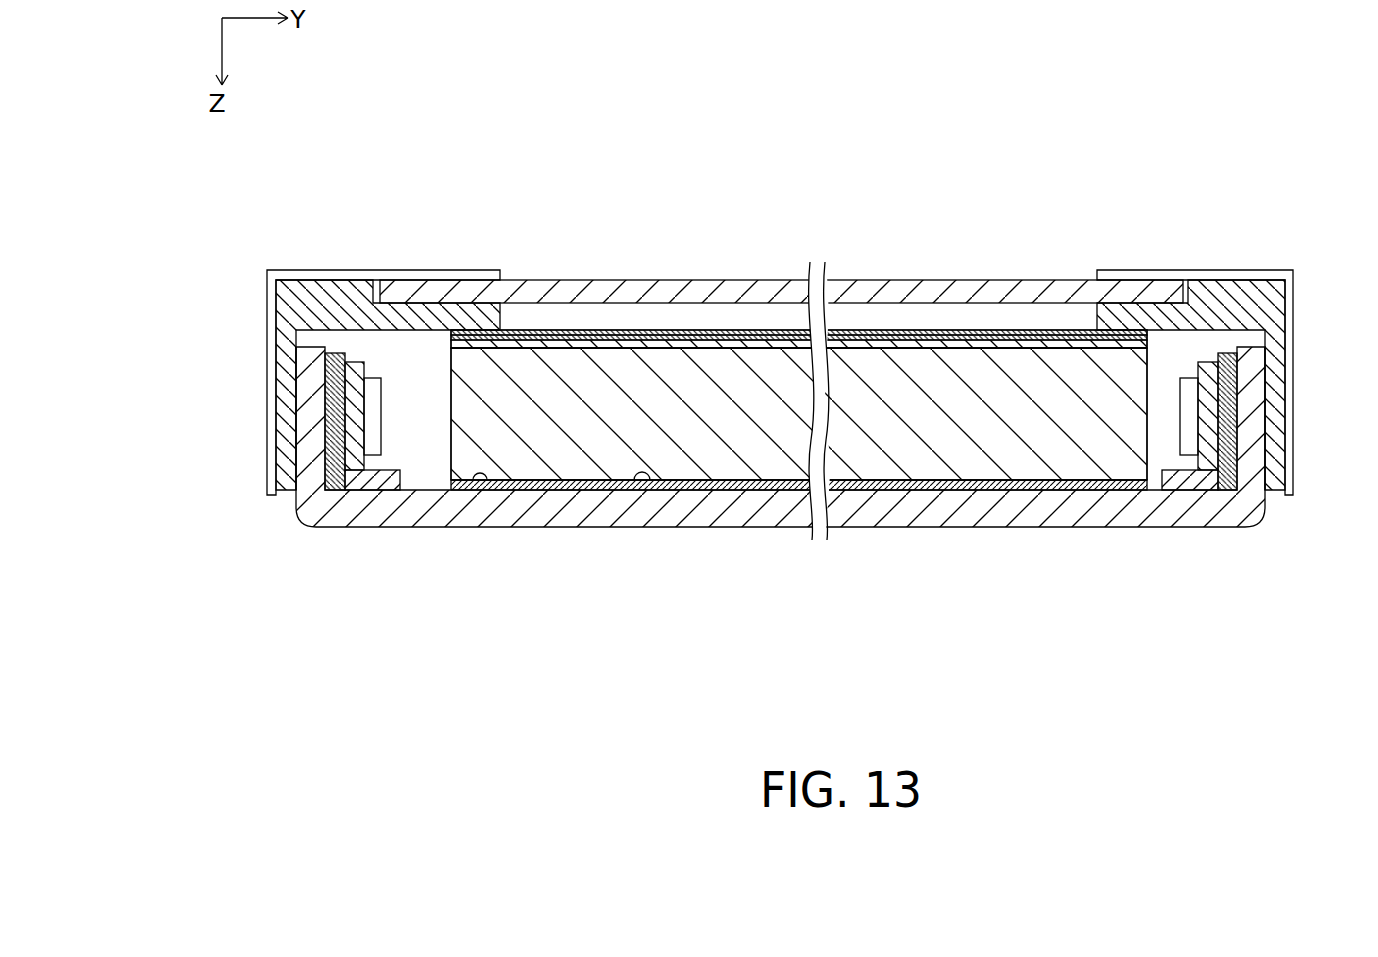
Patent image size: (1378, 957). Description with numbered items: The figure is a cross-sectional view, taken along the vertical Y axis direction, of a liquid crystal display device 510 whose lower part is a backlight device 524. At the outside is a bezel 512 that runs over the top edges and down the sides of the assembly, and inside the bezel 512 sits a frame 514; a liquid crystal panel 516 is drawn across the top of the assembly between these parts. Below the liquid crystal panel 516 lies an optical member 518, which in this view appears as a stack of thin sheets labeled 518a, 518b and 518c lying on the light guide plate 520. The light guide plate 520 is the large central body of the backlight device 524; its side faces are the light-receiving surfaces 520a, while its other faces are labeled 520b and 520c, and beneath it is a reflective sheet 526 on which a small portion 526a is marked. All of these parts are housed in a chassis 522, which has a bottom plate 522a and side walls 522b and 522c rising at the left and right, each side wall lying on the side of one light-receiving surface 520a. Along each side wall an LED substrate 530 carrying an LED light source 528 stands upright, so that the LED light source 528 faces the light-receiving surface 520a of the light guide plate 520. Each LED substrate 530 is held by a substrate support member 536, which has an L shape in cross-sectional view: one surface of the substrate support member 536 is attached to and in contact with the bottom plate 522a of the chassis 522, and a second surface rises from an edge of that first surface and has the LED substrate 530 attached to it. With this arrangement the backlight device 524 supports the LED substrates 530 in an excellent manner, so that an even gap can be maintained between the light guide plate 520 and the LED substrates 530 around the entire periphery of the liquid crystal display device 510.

The liquid crystal display device 510 is at (465, 233).
The bezel 512 is at (290, 275).
The frame 514 is at (330, 300).
The liquid crystal panel 516 is at (408, 292).
The optical member 518 is at (765, 230).
The first layer 518a is at (620, 336).
The second layer 518b is at (675, 336).
The third layer 518c is at (740, 333).
The light guide plate 520 is at (895, 455).
The light-receiving surface 520a is at (450, 450).
The upper surface of substrate 520b is at (957, 348).
The lower surface of substrate 520c is at (988, 482).
The chassis 522 is at (697, 508).
The bottom plate 522a is at (650, 477).
The side wall 522b is at (287, 405).
The side wall 522c is at (1253, 403).
The backlight device 524 is at (585, 576).
The reflective sheet 526 is at (543, 488).
The adhesive protrusion 526a is at (490, 473).
The LED light source 528 is at (372, 378).
The LED substrate 530 is at (350, 490).
The substrate support member 536 is at (353, 457).